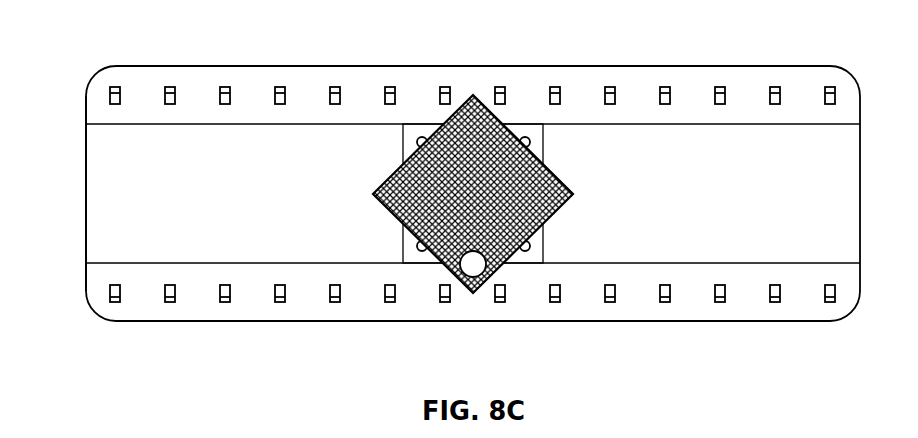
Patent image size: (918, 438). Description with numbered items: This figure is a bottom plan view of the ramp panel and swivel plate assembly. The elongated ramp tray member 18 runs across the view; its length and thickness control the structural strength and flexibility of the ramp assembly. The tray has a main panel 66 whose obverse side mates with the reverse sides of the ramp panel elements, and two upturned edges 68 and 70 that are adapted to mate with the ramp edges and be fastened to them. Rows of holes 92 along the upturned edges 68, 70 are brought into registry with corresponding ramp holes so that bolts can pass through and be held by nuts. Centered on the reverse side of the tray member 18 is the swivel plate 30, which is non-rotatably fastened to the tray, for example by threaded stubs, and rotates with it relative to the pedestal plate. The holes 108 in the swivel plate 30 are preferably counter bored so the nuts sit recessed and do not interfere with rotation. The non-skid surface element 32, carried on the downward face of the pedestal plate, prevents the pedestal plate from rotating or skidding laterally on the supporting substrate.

The ramp tray member 18 is at (207, 323).
The main panel 66 is at (97, 211).
The upturned edge 68 is at (362, 88).
The upturned edge 70 is at (747, 307).
The holes 92 is at (775, 86).
The swivel plate 30 is at (545, 140).
The non-skid surface element 32 is at (470, 110).
The holes 108 is at (530, 241).